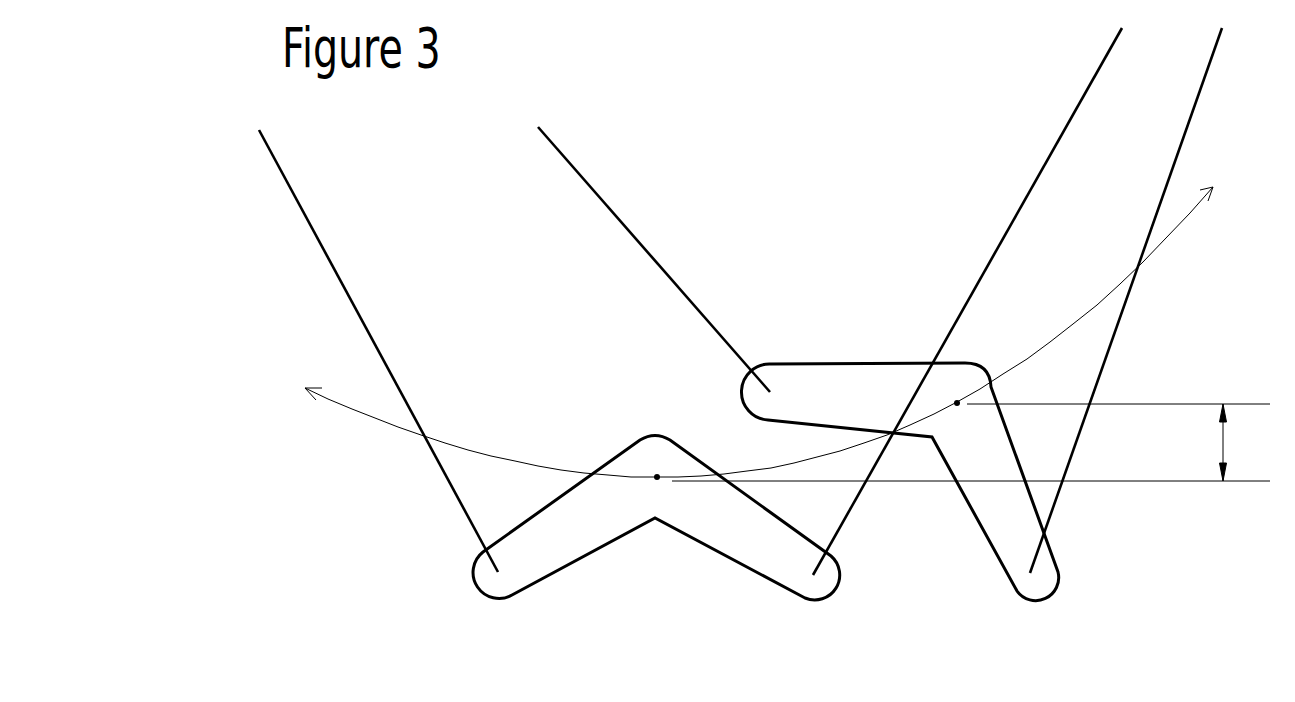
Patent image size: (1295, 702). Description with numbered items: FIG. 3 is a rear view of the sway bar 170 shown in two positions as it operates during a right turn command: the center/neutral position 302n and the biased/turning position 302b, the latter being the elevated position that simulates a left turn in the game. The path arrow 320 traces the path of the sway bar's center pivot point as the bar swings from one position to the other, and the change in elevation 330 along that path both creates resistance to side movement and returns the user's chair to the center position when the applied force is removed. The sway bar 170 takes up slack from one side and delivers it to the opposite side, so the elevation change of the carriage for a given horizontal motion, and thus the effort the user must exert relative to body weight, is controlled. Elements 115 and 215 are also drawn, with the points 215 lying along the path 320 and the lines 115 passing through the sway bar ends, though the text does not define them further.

The strands 115 is at (380, 350).
The sway bar 170 is at (682, 447).
The lateral joint points 215 is at (657, 476).
The center/neutral position 302n is at (727, 557).
The biased/turning position 302b is at (970, 510).
The path arrow 320 is at (500, 458).
The change in elevation 330 is at (976, 442).